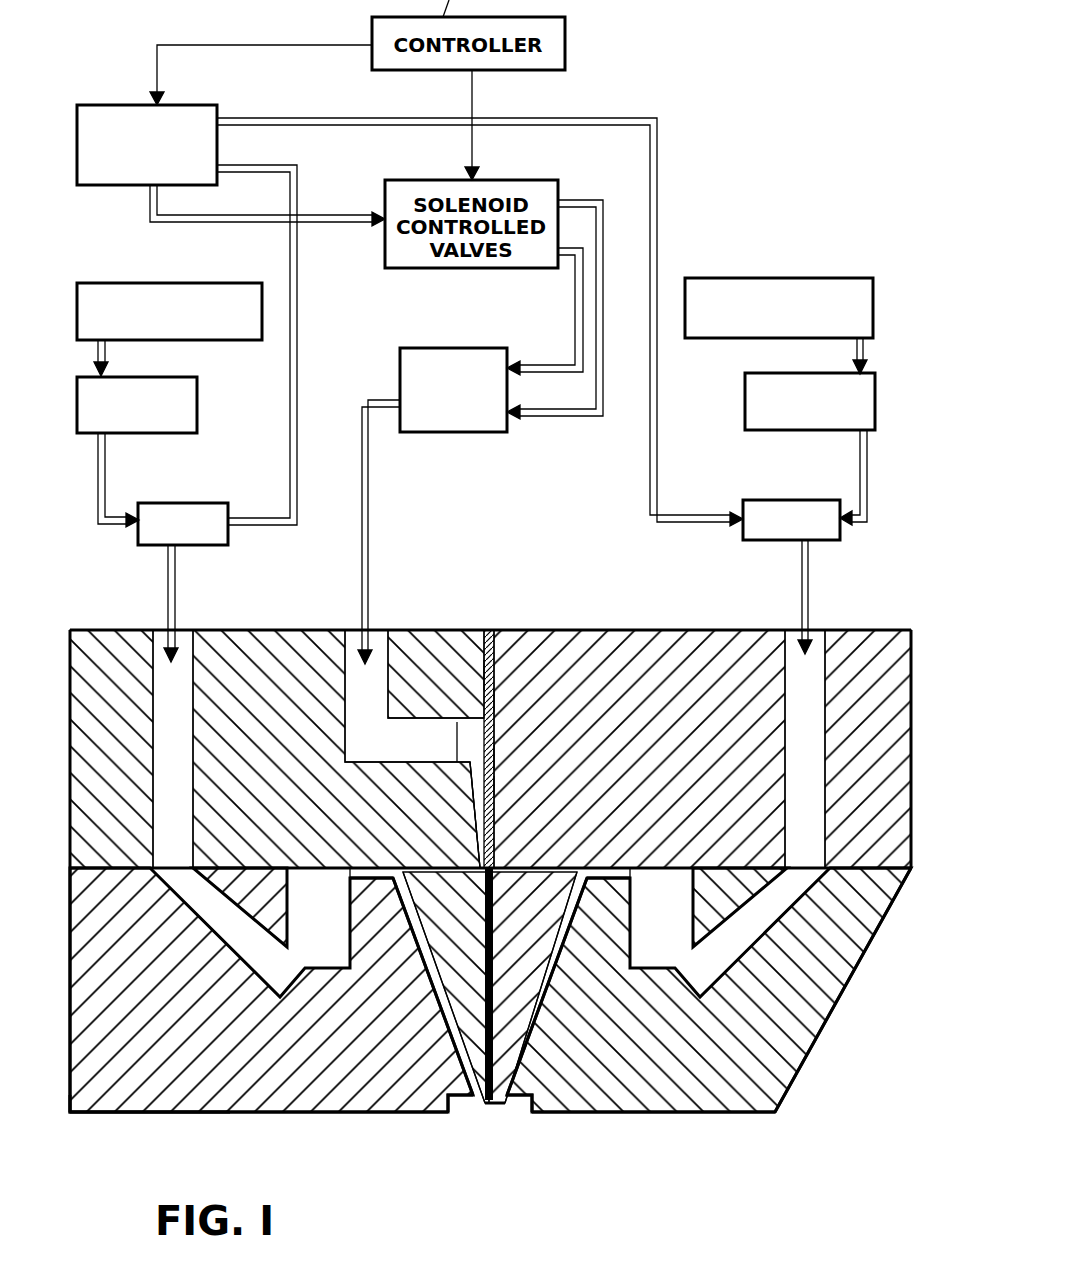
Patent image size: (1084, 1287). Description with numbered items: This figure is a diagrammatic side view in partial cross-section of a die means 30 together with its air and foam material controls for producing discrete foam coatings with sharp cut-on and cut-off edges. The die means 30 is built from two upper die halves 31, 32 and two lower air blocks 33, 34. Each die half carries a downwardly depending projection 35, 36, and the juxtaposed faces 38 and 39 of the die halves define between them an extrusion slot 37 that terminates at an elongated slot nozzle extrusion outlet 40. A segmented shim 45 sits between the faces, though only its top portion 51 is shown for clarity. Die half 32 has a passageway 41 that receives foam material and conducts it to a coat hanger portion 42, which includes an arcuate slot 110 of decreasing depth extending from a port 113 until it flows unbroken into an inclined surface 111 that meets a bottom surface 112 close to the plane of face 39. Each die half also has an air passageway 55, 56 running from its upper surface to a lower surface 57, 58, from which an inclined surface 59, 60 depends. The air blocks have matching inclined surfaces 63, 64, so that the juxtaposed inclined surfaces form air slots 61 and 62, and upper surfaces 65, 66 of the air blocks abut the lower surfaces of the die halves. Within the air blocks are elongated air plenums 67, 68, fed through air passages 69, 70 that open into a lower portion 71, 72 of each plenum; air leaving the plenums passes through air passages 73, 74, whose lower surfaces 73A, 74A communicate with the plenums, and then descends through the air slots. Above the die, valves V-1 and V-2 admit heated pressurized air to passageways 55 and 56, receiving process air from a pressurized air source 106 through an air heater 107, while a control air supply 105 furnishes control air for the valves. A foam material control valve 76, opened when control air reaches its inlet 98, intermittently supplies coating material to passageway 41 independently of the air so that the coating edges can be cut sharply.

The die means 30 is at (590, 584).
The die half 31 is at (665, 645).
The die half 32 is at (278, 650).
The air block 33 is at (740, 1100).
The air block 34 is at (210, 1095).
The downwardly depending projection 35 is at (545, 880).
The downwardly depending projection 36 is at (430, 845).
The extrusion slot 37 is at (512, 1000).
The face 38 is at (518, 1000).
The face 39 is at (447, 1018).
The slot nozzle extrusion outlet 40 is at (494, 1108).
The passageway 41 is at (365, 705).
The coat hanger portion 42 is at (498, 758).
The segmented shim 45 is at (502, 673).
The top portion of the shim 51 is at (494, 642).
The air passageway 55 is at (860, 630).
The air passageway 56 is at (170, 687).
The lower surface 57 is at (878, 860).
The lower surface 58 is at (100, 875).
The inclined surface 59 is at (540, 1025).
The inclined surface 60 is at (423, 985).
The air slot 61 is at (565, 1112).
The air slot 62 is at (425, 1112).
The inclined surface 63 is at (648, 1110).
The inclined surface 64 is at (365, 1110).
The upper surface 65 is at (915, 868).
The upper surface 66 is at (130, 872).
The air plenum 67 is at (655, 870).
The air plenum 68 is at (318, 870).
The air passage 69 is at (773, 912).
The air passage 70 is at (235, 985).
The lower portion of plenum 71 is at (658, 972).
The lower portion of plenum 72 is at (331, 1000).
The air passage 73 is at (613, 868).
The lower surface of air passage 73A is at (661, 918).
The air passage 74 is at (385, 872).
The lower surface of air passage 74A is at (318, 918).
The foam material control valve 76 is at (477, 438).
The inlet 98 is at (512, 420).
The control air supply 105 is at (99, 94).
The pressurized air source 106 is at (123, 274).
The air heater 107 is at (210, 393).
The arcuate slot 110 is at (498, 701).
The inclined surface 111 is at (498, 785).
The bottom surface 112 is at (455, 886).
The port 113 is at (445, 735).
The valve V-1 is at (771, 562).
The valve V-2 is at (138, 567).